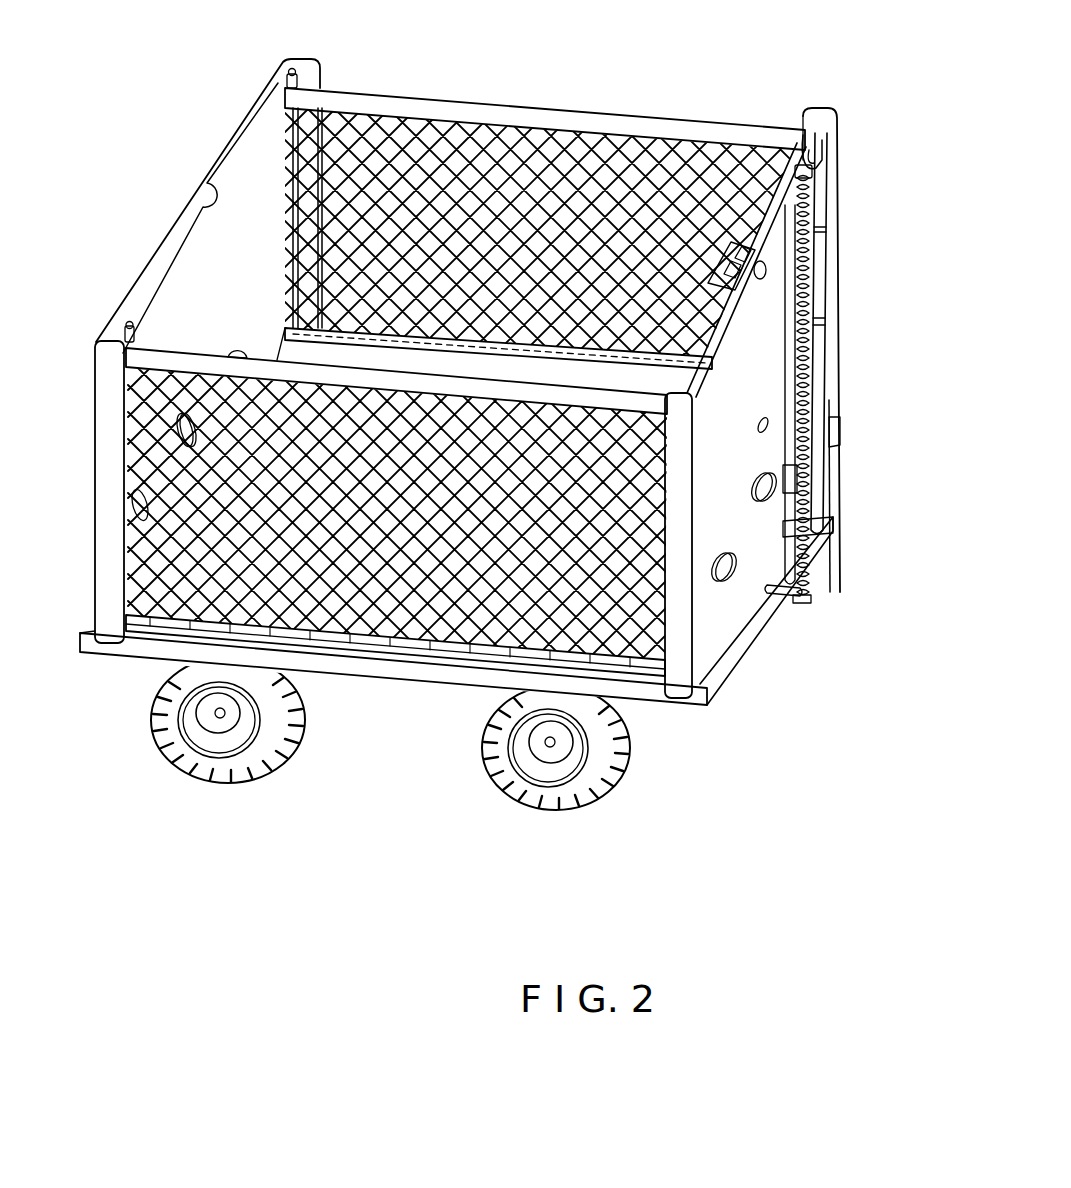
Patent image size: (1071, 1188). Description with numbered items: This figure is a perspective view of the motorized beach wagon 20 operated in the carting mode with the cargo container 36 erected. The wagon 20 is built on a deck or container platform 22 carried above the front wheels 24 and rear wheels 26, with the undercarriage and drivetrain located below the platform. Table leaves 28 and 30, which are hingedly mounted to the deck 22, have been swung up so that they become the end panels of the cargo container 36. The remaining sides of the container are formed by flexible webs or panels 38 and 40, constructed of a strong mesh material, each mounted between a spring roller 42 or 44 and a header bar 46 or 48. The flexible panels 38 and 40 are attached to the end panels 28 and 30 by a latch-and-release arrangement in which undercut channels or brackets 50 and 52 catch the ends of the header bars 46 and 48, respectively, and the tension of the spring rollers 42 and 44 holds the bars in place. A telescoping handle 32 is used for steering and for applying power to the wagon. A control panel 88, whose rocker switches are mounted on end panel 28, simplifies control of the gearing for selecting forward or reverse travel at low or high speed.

The motorized beach wagon 20 is at (325, 688).
The deck or container platform 22 is at (418, 677).
The front wheels 24 is at (597, 797).
The rear wheels 26 is at (167, 750).
The table leaf 28 is at (734, 420).
The table leaf 30 is at (266, 193).
The telescoping handle 32 is at (823, 282).
The cargo container 36 is at (833, 210).
The flexible web or panel 38 is at (530, 170).
The flexible web or panel 40 is at (258, 388).
The spring roller 42 is at (283, 328).
The spring roller 44 is at (355, 648).
The header bar 46 is at (390, 100).
The header bar 48 is at (190, 365).
The undercut channel or bracket 50 is at (284, 74).
The undercut channel or bracket 52 is at (135, 307).
The control panel 88 is at (745, 243).